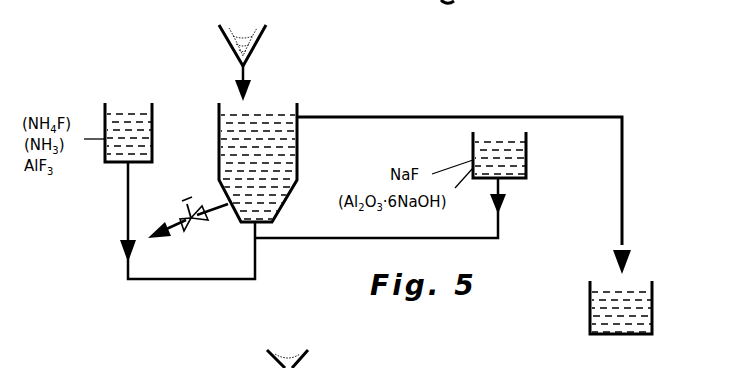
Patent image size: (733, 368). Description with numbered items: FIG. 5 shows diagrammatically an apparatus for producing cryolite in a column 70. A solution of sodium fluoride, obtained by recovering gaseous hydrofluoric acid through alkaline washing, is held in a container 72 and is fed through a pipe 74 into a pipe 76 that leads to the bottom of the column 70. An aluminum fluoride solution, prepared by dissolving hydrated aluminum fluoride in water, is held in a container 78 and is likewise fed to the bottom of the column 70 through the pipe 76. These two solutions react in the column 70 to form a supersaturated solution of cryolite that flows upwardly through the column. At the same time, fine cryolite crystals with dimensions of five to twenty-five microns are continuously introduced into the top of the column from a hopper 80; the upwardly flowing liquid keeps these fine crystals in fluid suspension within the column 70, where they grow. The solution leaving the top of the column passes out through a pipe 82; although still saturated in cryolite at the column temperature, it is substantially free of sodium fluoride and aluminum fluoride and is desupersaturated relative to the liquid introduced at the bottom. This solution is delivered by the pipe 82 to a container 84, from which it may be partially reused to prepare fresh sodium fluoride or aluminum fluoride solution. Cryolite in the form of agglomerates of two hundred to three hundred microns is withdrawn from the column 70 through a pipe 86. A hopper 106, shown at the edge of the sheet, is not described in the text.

The column 70 is at (297, 148).
The container 72 is at (473, 150).
The pipe 74 is at (500, 229).
The pipe 76 is at (257, 264).
The container 78 is at (152, 137).
The hopper 80 is at (256, 50).
The pipe 82 is at (409, 117).
The container 84 is at (590, 302).
The pipe 86 is at (178, 223).
The feed hopper 106 is at (318, 364).